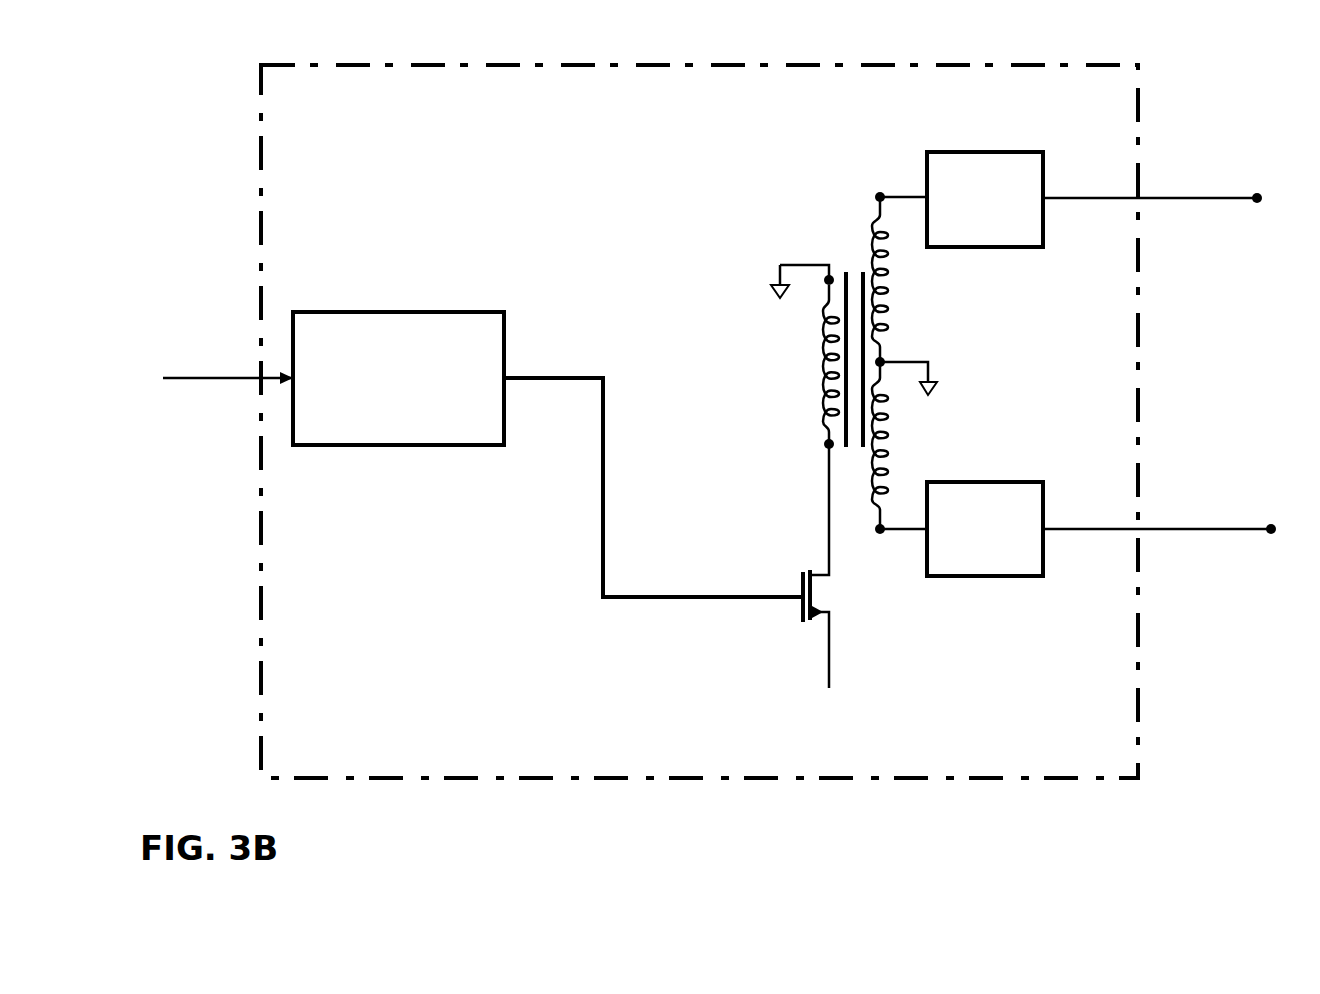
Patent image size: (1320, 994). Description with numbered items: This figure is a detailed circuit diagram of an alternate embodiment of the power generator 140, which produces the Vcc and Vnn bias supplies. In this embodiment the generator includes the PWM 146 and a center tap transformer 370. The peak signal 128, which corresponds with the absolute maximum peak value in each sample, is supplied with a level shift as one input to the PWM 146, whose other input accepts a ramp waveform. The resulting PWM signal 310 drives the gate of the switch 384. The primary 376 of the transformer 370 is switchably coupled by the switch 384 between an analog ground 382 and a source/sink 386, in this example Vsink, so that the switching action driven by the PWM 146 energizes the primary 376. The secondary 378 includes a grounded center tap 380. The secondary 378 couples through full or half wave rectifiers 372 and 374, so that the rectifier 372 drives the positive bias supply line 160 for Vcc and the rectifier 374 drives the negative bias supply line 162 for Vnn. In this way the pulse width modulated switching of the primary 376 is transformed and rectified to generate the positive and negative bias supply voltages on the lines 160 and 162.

The power generator 140 is at (261, 96).
The peak signal 128 is at (226, 378).
The PWM 146 is at (496, 312).
The PWM signal 310 is at (580, 378).
The center tap transformer 370 is at (810, 205).
The rectifier 372 is at (926, 160).
The rectifier 374 is at (1017, 487).
The primary 376 is at (823, 375).
The secondary 378 is at (905, 291).
The center tap 380 is at (928, 362).
The analog ground 382 is at (780, 265).
The switch 384 is at (814, 588).
The source/sink 386 is at (829, 688).
The positive bias supply line 160 is at (1178, 199).
The negative bias supply line 162 is at (1178, 530).